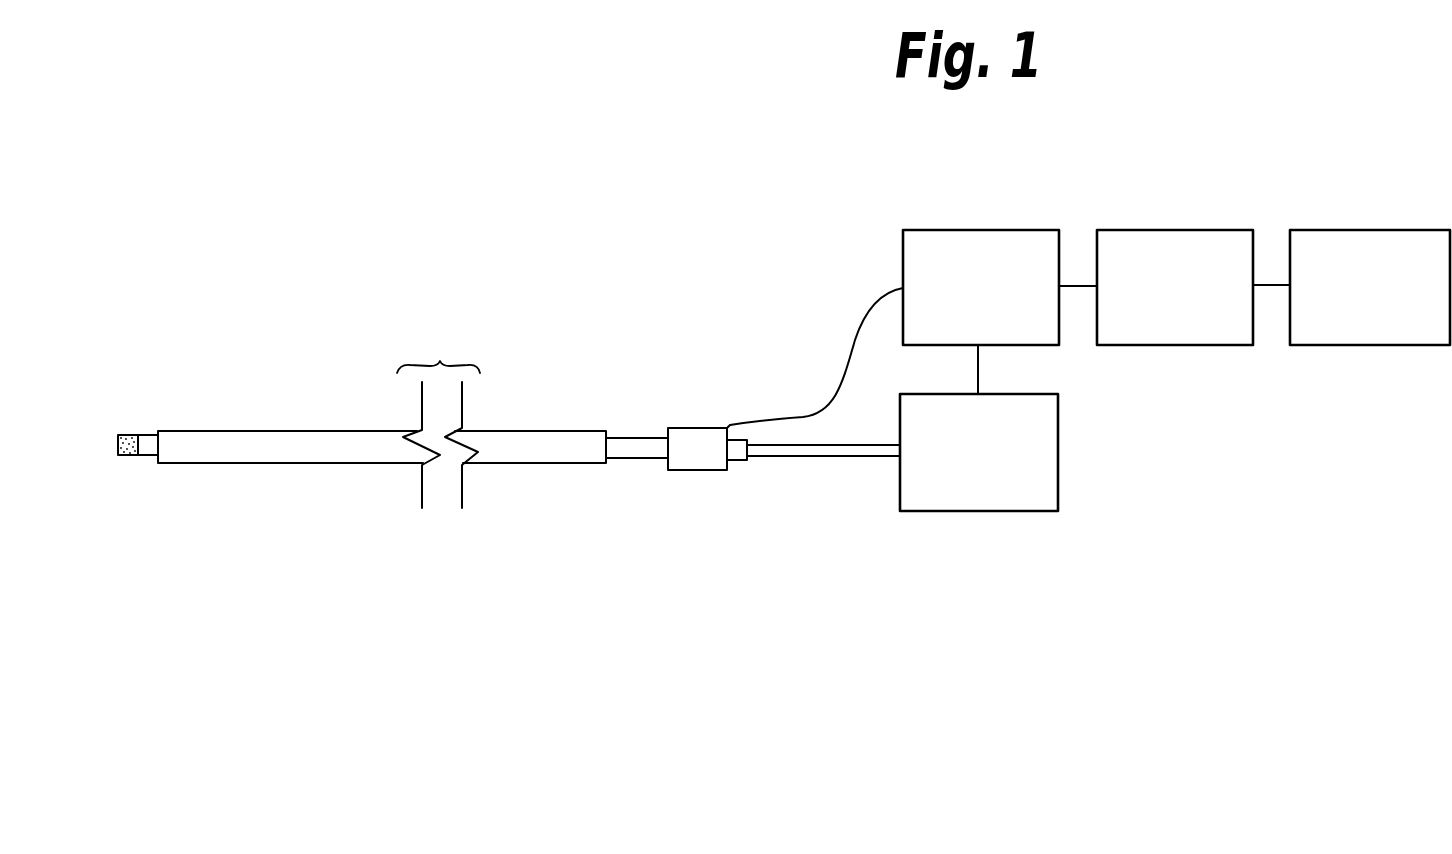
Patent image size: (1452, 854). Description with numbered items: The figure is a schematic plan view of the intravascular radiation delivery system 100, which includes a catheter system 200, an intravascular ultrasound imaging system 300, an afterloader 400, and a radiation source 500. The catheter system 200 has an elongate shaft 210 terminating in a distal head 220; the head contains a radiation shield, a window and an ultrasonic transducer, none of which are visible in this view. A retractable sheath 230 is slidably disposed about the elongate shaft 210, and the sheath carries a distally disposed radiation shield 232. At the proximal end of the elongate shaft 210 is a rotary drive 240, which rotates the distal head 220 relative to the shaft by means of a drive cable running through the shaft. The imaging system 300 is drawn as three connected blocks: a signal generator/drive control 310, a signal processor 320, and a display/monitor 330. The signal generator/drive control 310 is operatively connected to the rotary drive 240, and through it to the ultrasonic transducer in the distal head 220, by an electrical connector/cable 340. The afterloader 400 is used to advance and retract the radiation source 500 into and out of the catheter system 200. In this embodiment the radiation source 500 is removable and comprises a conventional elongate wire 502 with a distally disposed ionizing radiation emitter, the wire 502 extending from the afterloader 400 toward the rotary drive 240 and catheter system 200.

The radiation delivery system 100 is at (513, 240).
The catheter system 200 is at (391, 335).
The elongate shaft 210 is at (143, 442).
The distal head 220 is at (130, 458).
The retractable sheath 230 is at (288, 450).
The radiation shield 232 is at (188, 445).
The rotary drive 240 is at (702, 462).
The intravascular ultrasound (IVUS) imaging system 300 is at (878, 217).
The signal generator/drive control 310 is at (1025, 257).
The signal processor 320 is at (1195, 262).
The display/monitor 330 is at (1372, 262).
The electrical connector/cable 340 is at (848, 368).
The afterloader 400 is at (1084, 453).
The radiation source 500 is at (875, 480).
The elongate wire 502 is at (845, 448).